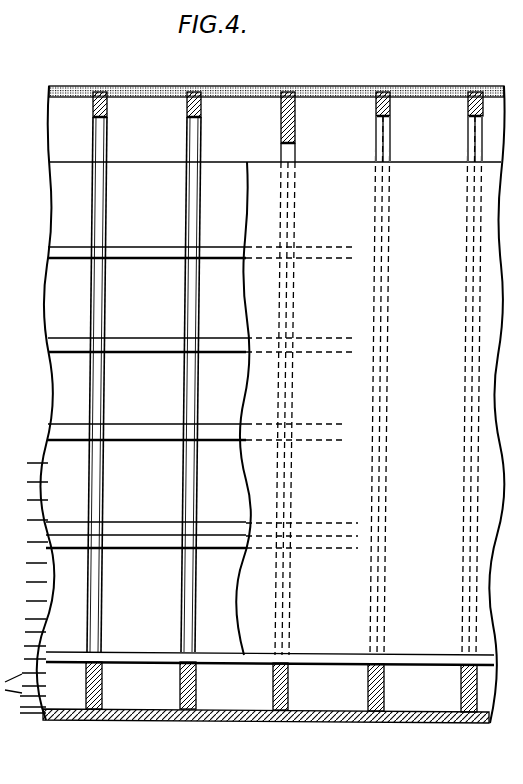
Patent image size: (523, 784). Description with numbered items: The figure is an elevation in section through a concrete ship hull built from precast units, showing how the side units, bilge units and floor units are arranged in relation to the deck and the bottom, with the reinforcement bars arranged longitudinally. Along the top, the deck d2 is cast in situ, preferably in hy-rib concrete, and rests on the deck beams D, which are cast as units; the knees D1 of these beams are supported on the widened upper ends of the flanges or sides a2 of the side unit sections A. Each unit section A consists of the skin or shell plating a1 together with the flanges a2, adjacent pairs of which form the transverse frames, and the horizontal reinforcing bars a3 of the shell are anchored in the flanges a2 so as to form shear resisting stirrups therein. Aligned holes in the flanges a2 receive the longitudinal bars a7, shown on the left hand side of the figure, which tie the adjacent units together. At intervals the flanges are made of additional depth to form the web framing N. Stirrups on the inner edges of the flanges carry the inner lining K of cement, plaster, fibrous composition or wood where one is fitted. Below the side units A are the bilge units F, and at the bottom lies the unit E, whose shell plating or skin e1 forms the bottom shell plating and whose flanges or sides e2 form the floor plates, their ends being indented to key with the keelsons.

The deck d2 is at (143, 86).
The deck beams D is at (202, 108).
The knees of the deck beams D1 is at (104, 148).
The web framing N is at (281, 127).
The flanges or sides a2 is at (100, 180).
The longitudinal bars a7 is at (48, 252).
The skin or shell plating a1 is at (181, 406).
The horizontal reinforcing bars a3 is at (37, 482).
The unit section A is at (143, 356).
The inner lining K is at (370, 420).
The bilge units F is at (177, 619).
The unit forming the bottom shell plating and floor plates E is at (232, 691).
The shell plating or skin e1 is at (62, 721).
The flanges or sides forming the floor plates e2 is at (197, 694).